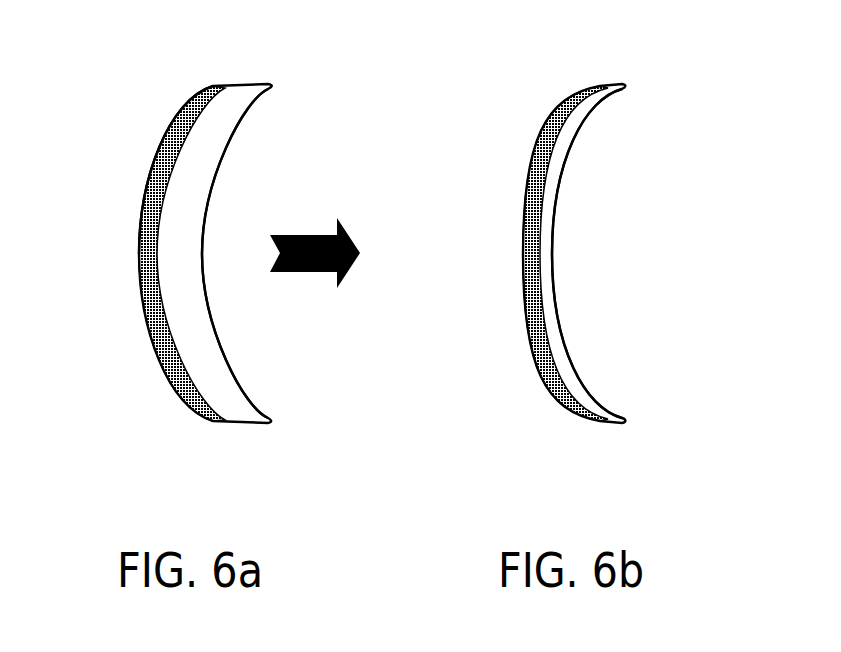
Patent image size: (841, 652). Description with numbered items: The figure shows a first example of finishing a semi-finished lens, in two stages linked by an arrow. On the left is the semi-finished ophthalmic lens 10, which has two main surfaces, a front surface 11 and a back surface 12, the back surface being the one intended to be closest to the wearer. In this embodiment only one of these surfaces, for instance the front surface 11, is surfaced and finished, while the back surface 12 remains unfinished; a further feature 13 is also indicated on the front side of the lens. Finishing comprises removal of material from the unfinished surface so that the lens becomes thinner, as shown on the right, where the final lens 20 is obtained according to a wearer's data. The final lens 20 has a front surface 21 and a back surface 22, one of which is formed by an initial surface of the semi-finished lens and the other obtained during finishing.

In FIG. 6a, the semi-finished ophthalmic lens 10 is at (186, 434).
In FIG. 6a, the front surface 11 is at (161, 371).
In FIG. 6a, the back surface 12 is at (203, 338).
In FIG. 6a, the convex front surface 13 is at (152, 333).
In FIG. 6b, the final lens 20 is at (596, 335).
In FIG. 6b, the front surface 21 is at (552, 113).
In FIG. 6b, the back surface 22 is at (565, 199).